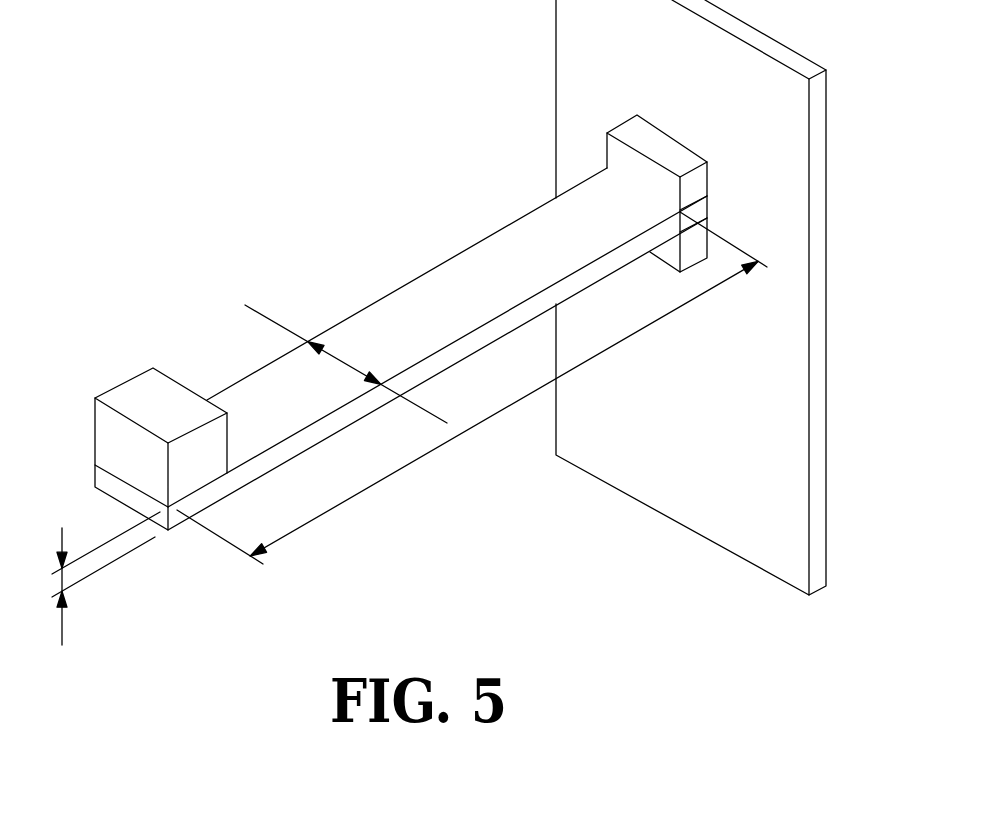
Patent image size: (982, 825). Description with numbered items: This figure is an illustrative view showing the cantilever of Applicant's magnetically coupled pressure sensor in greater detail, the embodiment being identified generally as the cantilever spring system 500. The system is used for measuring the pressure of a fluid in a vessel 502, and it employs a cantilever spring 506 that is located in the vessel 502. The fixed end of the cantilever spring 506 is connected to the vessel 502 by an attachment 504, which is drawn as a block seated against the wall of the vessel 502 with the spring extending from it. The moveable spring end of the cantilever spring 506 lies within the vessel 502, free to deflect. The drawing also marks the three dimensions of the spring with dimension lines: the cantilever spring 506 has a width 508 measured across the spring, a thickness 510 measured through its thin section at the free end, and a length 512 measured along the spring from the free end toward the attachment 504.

The cantilever spring system 500 is at (290, 128).
The vessel 502 is at (658, 43).
The attachment 504 is at (607, 147).
The cantilever spring 506 is at (490, 256).
The width 508 is at (324, 346).
The thickness 510 is at (101, 600).
The length 512 is at (380, 479).